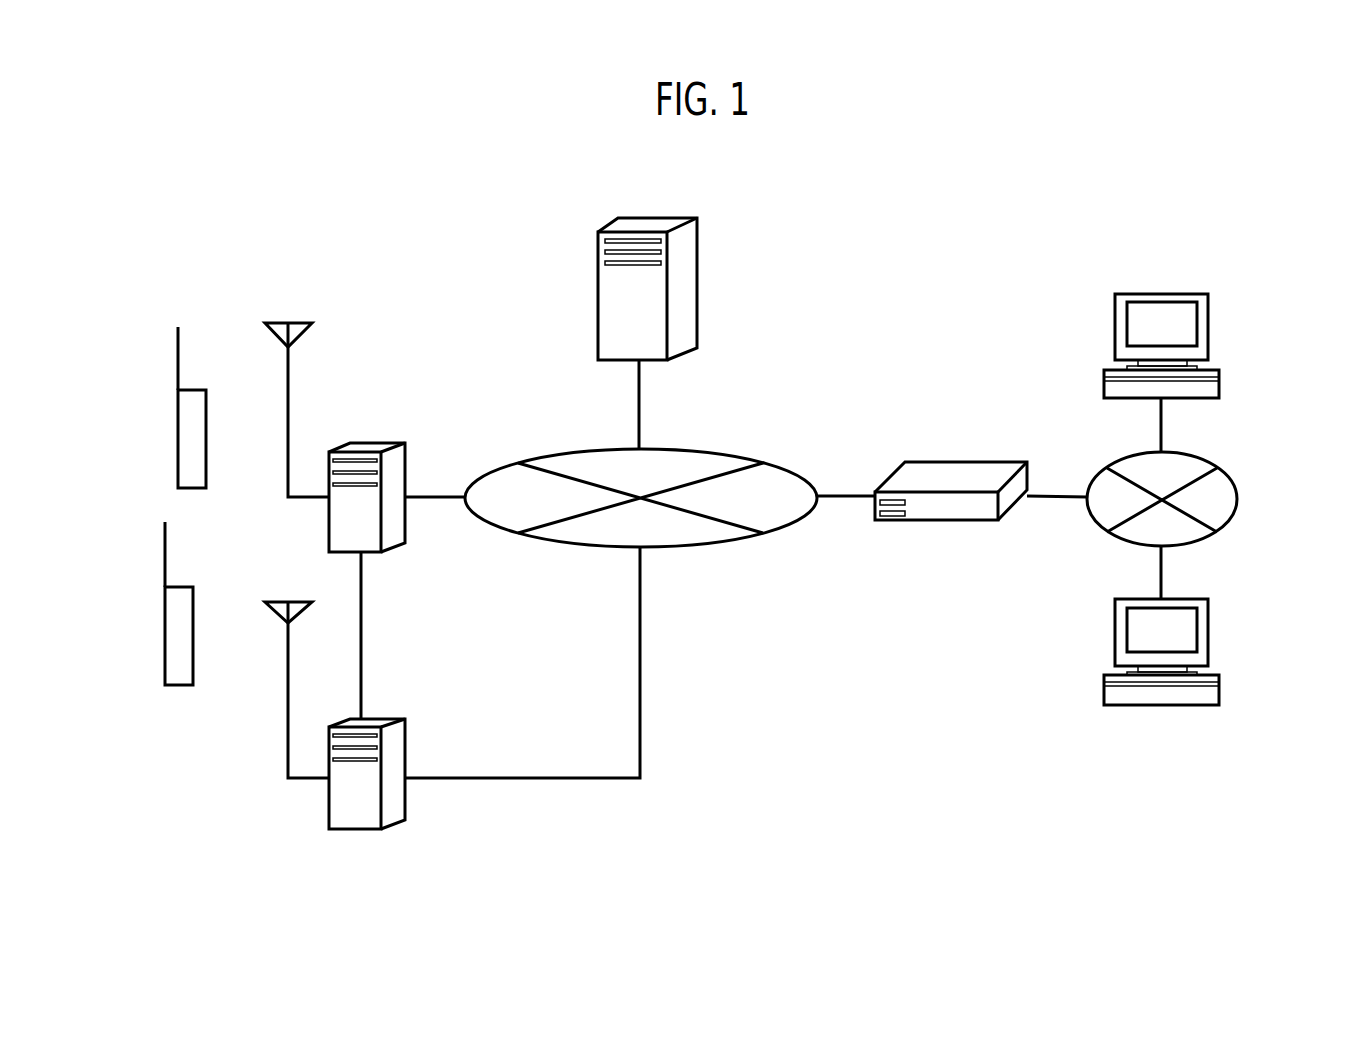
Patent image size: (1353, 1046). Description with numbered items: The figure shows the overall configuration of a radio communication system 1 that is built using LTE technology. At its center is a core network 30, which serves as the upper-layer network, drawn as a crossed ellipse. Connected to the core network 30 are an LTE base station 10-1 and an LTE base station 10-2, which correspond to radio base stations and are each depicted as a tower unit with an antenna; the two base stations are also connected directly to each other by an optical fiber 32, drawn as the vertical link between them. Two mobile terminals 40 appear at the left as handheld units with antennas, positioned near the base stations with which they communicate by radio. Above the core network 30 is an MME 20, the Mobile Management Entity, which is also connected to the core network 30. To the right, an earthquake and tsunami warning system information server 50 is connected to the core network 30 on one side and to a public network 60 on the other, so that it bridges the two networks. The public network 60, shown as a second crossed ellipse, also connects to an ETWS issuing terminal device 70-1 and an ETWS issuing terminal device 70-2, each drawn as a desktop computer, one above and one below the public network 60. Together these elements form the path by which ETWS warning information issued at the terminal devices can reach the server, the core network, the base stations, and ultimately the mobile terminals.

The radio communication system 1 is at (1035, 227).
The LTE base station 10-1 is at (373, 443).
The LTE base station 10-2 is at (397, 719).
The MME 20 is at (668, 217).
The core network 30 is at (732, 455).
The optical fiber 32 is at (361, 602).
The mobile terminals 40 is at (178, 424).
The ETWS information server 50 is at (960, 462).
The public network 60 is at (1238, 497).
The ETWS issuing terminal device 70-1 is at (1208, 317).
The ETWS issuing terminal device 70-2 is at (1208, 625).